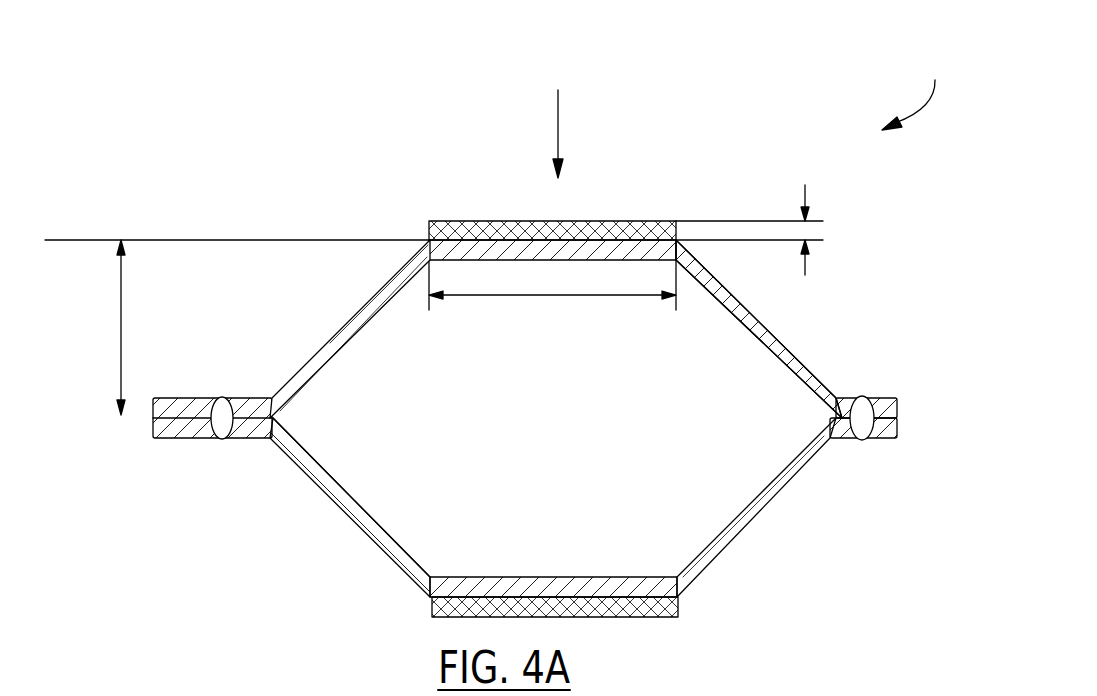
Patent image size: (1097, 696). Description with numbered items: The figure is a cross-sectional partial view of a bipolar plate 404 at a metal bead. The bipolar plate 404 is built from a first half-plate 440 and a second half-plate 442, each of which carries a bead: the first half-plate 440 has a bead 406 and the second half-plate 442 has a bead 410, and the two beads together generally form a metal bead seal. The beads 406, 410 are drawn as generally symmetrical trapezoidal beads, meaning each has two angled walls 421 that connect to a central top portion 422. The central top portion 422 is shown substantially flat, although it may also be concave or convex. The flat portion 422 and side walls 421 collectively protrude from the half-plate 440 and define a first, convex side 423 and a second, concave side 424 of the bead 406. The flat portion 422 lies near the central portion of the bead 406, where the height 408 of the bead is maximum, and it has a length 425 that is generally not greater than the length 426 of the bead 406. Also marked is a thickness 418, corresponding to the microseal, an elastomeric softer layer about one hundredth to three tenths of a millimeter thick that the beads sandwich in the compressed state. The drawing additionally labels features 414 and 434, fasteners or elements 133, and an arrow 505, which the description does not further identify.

The bipolar plate 404 is at (915, 94).
The bead 406 is at (785, 365).
The height of the bead 408 is at (122, 333).
The bead 410 is at (353, 508).
The top reflective layer 414 is at (658, 230).
The thickness 418 is at (805, 188).
The angled walls 421 is at (358, 318).
The central top portion 422 is at (488, 250).
The first, convex side 423 is at (378, 280).
The second, concave side 424 is at (352, 345).
The length of the flat portion 425 is at (544, 297).
The length of the bead 426 is at (632, 25).
The upper surface of lower wall 434 is at (387, 527).
The first half-plate 440 is at (882, 404).
The second half-plate 442 is at (896, 430).
The fastener 133 is at (222, 428).
The incident light direction 505 is at (560, 125).